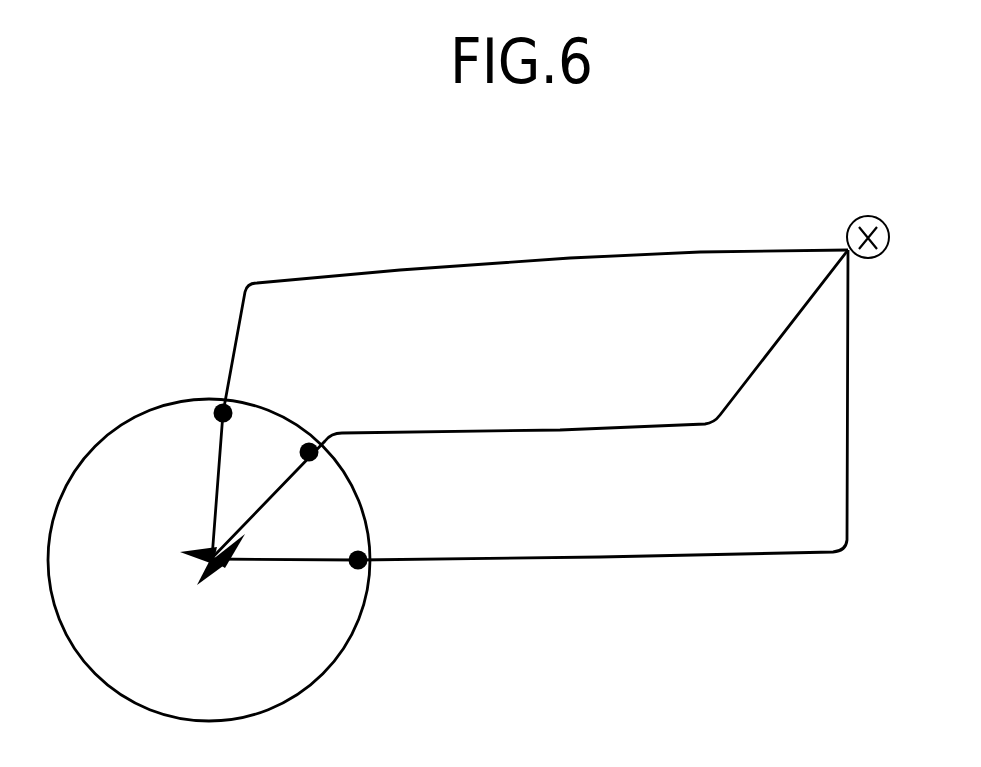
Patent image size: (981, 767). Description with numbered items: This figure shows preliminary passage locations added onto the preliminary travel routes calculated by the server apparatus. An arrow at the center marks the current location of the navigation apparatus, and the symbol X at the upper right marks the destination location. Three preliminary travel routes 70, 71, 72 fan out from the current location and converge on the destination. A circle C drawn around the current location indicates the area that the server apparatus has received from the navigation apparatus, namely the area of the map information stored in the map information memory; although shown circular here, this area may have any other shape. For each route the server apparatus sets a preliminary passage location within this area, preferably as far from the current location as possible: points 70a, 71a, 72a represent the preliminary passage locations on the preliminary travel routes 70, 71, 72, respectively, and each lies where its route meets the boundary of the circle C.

The preliminary travel route 70 is at (512, 258).
The preliminary passage location 70a is at (205, 398).
The preliminary travel route 71 is at (545, 428).
The preliminary passage location 71a is at (305, 432).
The preliminary travel route 72 is at (580, 557).
The preliminary passage location 72a is at (360, 568).
The circle C is at (318, 680).